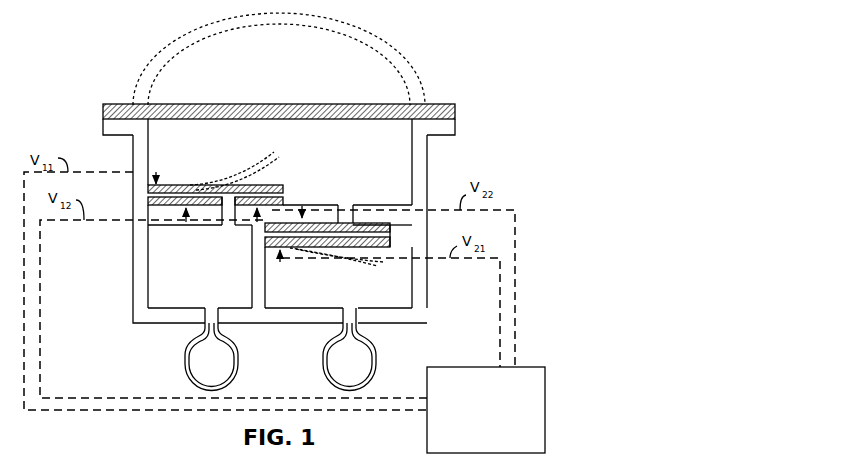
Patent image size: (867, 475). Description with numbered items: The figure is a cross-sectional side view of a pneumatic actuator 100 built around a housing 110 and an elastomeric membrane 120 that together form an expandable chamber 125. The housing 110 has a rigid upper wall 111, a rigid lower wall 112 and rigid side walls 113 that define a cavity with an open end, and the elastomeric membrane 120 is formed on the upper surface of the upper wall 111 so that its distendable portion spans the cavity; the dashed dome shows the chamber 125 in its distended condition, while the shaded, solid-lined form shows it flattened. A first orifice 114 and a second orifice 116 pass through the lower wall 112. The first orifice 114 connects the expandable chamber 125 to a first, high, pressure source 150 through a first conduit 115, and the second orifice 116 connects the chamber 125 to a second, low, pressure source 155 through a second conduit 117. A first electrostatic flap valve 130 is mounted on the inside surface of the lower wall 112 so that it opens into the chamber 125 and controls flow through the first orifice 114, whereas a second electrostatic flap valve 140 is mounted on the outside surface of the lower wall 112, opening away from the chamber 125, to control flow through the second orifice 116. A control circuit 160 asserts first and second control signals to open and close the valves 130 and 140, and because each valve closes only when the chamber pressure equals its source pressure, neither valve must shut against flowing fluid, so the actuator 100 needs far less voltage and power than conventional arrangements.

The pneumatic actuator 100 is at (112, 40).
The housing 110 is at (128, 258).
The upper wall 111 is at (103, 127).
The lower wall 112 is at (398, 216).
The side wall 113 is at (133, 166).
The first orifice 114 is at (231, 229).
The first conduit 115 is at (214, 288).
The second orifice 116 is at (346, 206).
The second conduit 117 is at (398, 293).
The elastomeric membrane 120 is at (390, 104).
The expandable chamber 125 is at (213, 141).
The first electrostatic flap valve 130 is at (280, 175).
The second electrostatic flap valve 140 is at (371, 264).
The first pressure source 150 is at (186, 374).
The second pressure source 155 is at (324, 374).
The control circuit 160 is at (486, 410).